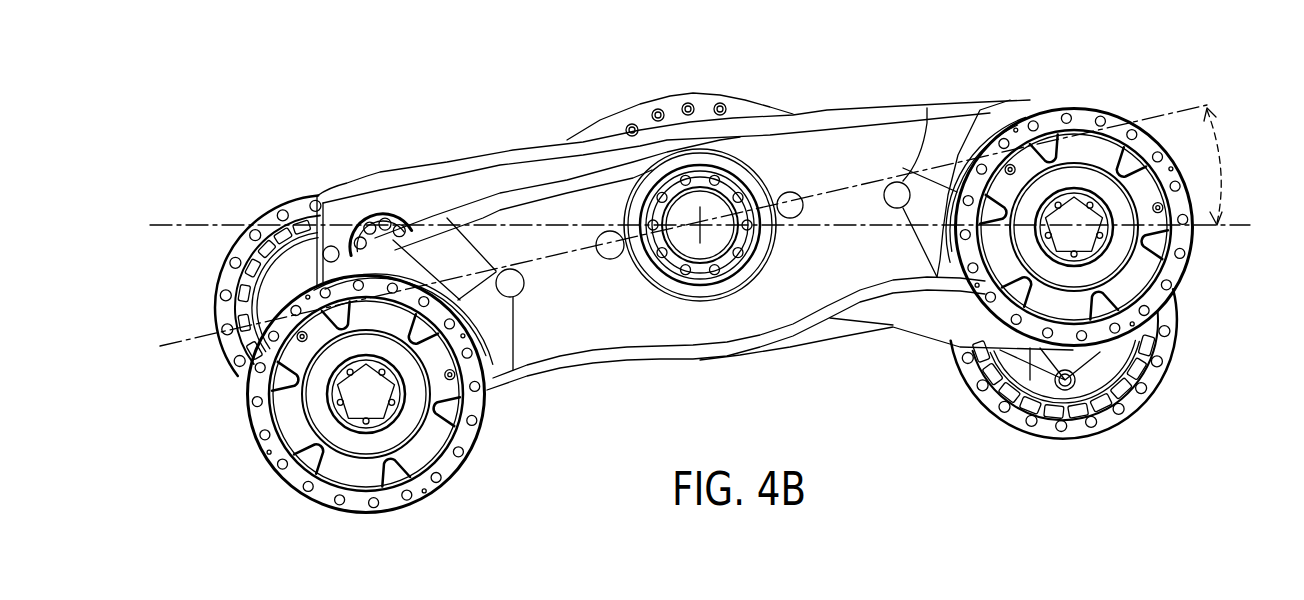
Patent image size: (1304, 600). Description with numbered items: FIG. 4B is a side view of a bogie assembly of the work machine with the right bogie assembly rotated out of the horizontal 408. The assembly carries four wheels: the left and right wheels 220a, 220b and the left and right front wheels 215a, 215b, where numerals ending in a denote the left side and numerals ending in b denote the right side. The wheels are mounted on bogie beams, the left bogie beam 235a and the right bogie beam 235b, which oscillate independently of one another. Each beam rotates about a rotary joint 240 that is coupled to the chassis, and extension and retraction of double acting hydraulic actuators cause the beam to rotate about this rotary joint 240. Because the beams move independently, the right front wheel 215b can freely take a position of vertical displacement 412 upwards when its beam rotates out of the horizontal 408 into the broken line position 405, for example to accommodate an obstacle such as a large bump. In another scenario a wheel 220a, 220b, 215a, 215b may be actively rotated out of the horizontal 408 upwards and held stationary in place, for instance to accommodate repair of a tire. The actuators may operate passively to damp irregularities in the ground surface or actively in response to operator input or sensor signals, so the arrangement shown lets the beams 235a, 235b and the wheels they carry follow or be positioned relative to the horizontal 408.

The left wheel 220a is at (302, 207).
The right wheel 220b is at (283, 477).
The left front wheel 215a is at (1000, 420).
The right front wheel 215b is at (1085, 118).
The rotary joint 240 is at (740, 163).
The left bogie beam 235a is at (905, 305).
The right bogie beam 235b is at (572, 313).
The broken line position 405 is at (1212, 106).
The vertical displacement 412 is at (1222, 177).
The horizontal 408 is at (1240, 222).